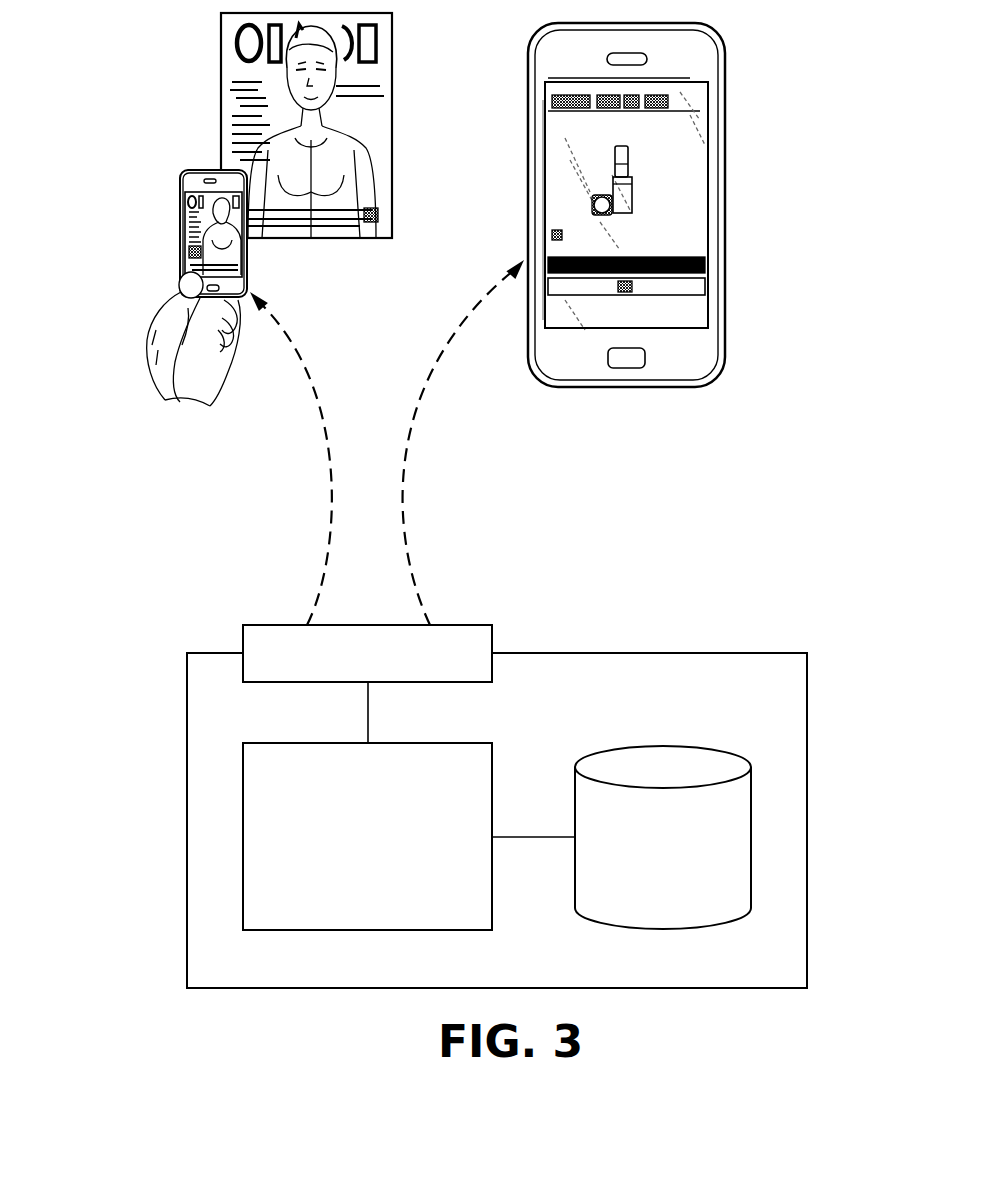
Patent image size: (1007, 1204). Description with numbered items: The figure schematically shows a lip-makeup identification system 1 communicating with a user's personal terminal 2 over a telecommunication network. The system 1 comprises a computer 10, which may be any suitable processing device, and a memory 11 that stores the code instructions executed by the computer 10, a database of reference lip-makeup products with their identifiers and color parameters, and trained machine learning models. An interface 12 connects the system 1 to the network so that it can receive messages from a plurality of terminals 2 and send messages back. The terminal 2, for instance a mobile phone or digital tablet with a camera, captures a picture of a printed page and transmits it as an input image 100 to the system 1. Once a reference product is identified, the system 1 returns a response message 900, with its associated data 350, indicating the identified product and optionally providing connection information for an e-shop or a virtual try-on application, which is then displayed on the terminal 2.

The lip-makeup identification system 1 is at (175, 706).
The user's personal terminal 2 is at (165, 198).
The computer 10 is at (382, 851).
The memory 11 is at (677, 862).
The interface 12 is at (382, 668).
The input image 100 is at (322, 517).
The returned content data 350 is at (503, 442).
The response message 900 is at (416, 516).